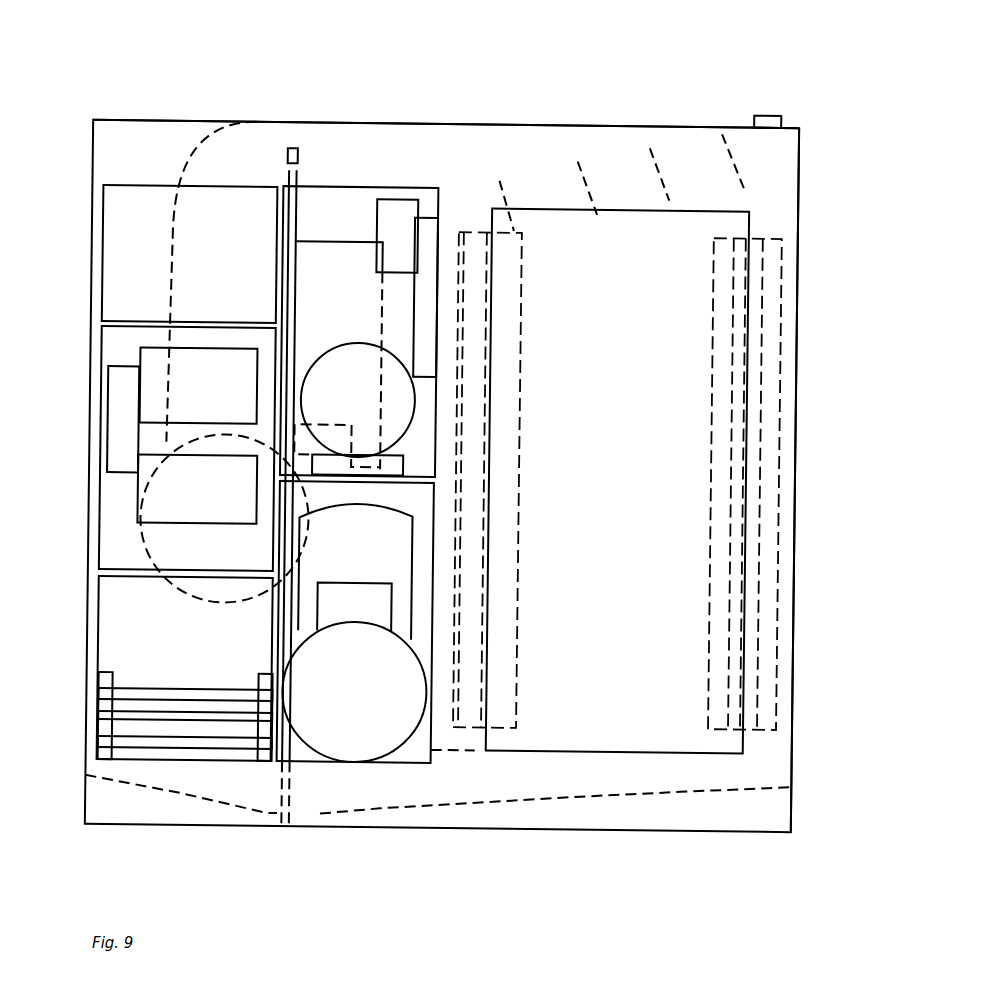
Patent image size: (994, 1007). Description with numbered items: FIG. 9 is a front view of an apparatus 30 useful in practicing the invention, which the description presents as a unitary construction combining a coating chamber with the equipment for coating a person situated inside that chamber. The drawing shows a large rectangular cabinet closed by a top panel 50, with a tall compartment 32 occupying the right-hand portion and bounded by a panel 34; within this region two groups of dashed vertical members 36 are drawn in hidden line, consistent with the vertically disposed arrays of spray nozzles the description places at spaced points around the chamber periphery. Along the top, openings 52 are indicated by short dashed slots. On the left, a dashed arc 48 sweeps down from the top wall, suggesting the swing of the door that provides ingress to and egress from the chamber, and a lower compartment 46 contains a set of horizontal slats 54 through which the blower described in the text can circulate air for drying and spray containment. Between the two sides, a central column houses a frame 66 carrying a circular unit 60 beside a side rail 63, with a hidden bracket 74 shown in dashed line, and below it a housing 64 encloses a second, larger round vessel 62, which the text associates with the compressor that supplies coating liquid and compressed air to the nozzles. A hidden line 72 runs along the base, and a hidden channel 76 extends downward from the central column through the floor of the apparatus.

The dispensing apparatus cabinet 30 is at (138, 84).
The right compartment 32 is at (646, 571).
The compartment panel 34 is at (590, 481).
The hidden supports 36 is at (711, 334).
The lower left compartment 46 is at (178, 593).
The door swing path 48 is at (169, 243).
The top panel 50 is at (309, 122).
The vent openings 52 is at (492, 176).
The slats 54 is at (158, 728).
The pump 60 is at (344, 376).
The tank 62 is at (363, 618).
The side rail 63 is at (398, 318).
The housing 64 is at (362, 538).
The mounting frame 66 is at (335, 274).
The bottom hidden line 72 is at (393, 806).
The hidden bracket 74 is at (300, 440).
The hidden channel 76 is at (293, 790).